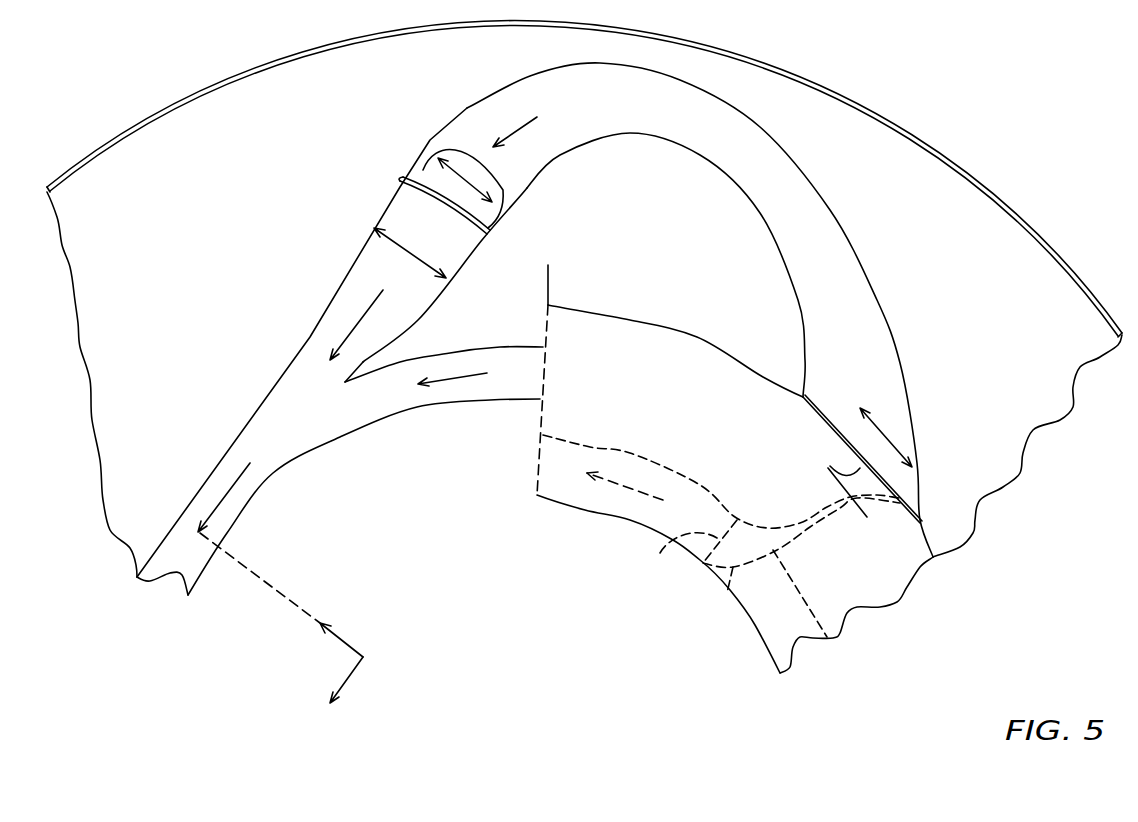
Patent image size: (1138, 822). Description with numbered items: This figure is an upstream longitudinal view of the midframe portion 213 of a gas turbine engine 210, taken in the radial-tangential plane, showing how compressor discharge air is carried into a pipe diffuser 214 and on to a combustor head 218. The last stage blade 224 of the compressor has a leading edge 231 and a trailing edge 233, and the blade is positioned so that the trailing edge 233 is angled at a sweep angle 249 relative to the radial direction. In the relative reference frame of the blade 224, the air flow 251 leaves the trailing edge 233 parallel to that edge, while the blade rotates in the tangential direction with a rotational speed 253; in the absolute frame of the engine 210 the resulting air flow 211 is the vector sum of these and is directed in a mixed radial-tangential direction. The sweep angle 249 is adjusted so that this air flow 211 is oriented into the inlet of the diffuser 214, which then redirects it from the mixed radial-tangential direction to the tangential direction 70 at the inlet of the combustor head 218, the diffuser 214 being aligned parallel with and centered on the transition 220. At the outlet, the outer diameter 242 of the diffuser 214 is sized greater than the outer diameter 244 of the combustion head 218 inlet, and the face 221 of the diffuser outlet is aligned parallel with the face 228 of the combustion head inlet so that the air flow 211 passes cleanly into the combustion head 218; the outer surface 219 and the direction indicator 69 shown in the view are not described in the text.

The gas turbine engine 210 is at (816, 43).
The midframe portion 213 is at (867, 70).
The outer surface 219 is at (878, 112).
The diffuser 214 is at (745, 182).
The transition 220 is at (330, 301).
The air flow 211 is at (518, 133).
The face of the diffuser outlet 221 is at (402, 178).
The combustor head 218 is at (427, 155).
The face of the combustion head inlet 228 is at (474, 157).
The outer diameter of the diffuser outlet 242 is at (422, 255).
The outer diameter of the combustion head inlet 244 is at (524, 190).
The rotational speed 253 is at (888, 437).
The air flow 251 is at (890, 458).
The sweep angle 249 is at (872, 492).
The trailing edge 233 is at (893, 503).
The leading edge 231 is at (662, 555).
The last stage blade 224 is at (723, 595).
The radial direction 69 is at (340, 637).
The tangential direction 70 is at (353, 677).